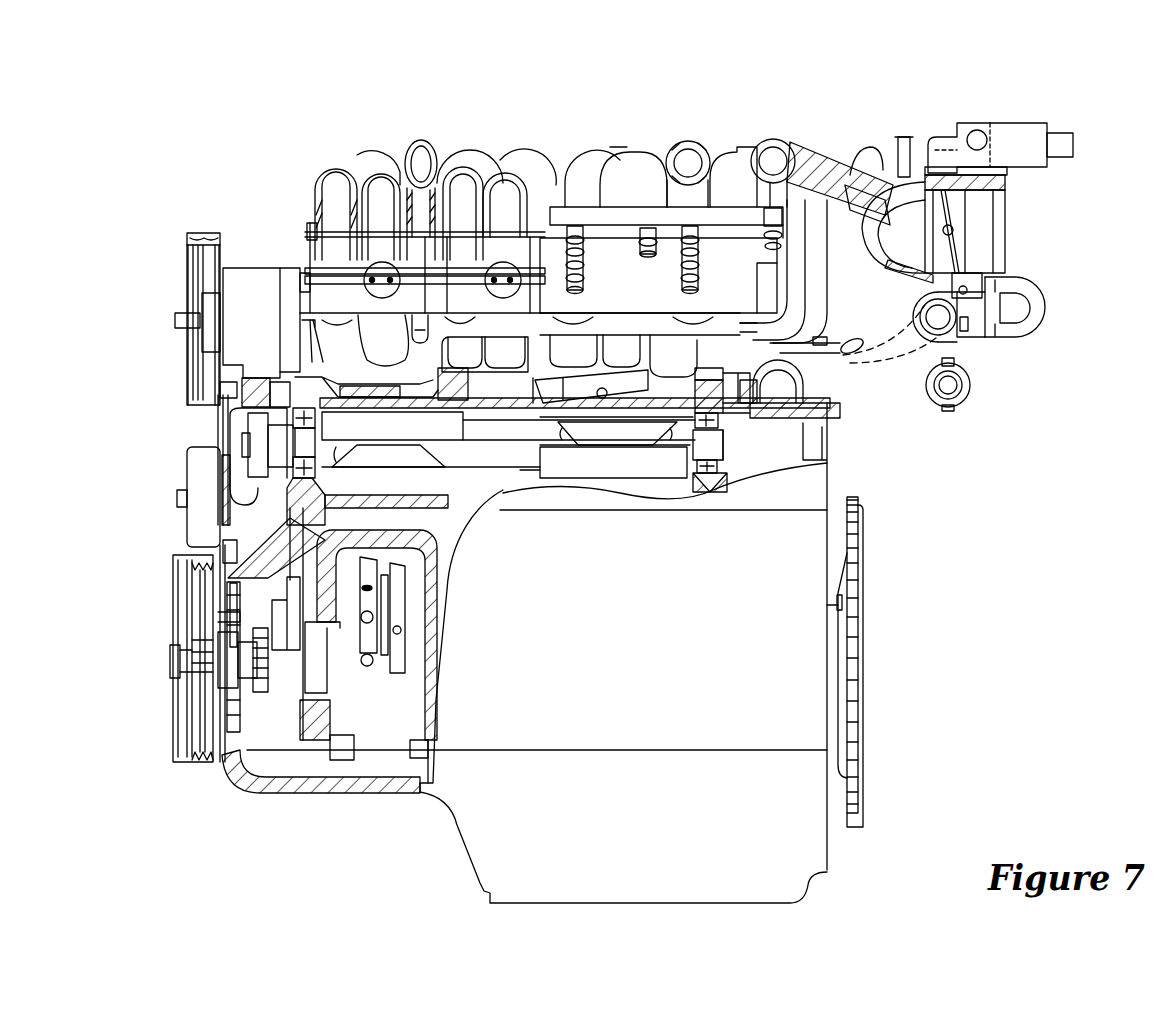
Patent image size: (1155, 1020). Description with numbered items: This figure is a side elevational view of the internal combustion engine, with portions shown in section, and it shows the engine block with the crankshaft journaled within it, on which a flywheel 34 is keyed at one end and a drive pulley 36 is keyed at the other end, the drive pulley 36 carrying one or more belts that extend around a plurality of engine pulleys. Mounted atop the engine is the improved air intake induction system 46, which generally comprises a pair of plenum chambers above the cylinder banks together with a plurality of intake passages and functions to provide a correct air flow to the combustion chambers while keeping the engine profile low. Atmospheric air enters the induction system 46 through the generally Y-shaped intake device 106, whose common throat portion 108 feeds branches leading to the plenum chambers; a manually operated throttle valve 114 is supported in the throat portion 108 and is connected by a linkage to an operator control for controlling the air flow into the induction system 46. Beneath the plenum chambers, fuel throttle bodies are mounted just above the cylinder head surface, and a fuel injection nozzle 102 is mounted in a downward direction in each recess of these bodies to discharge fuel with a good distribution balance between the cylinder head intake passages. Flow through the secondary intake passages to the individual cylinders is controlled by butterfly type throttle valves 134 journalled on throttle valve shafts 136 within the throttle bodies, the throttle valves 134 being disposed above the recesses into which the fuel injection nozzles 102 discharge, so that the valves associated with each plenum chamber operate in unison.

The air intake induction system 46 is at (633, 118).
The fuel injection nozzle 102 is at (587, 262).
The intake device 106 is at (875, 152).
The common throat portion 108 is at (1003, 173).
The throttle valve 114 is at (957, 257).
The butterfly type throttle valve 134 is at (383, 262).
The throttle valve shaft 136 is at (337, 272).
The drive pulley 36 is at (178, 765).
The flywheel 34 is at (852, 830).